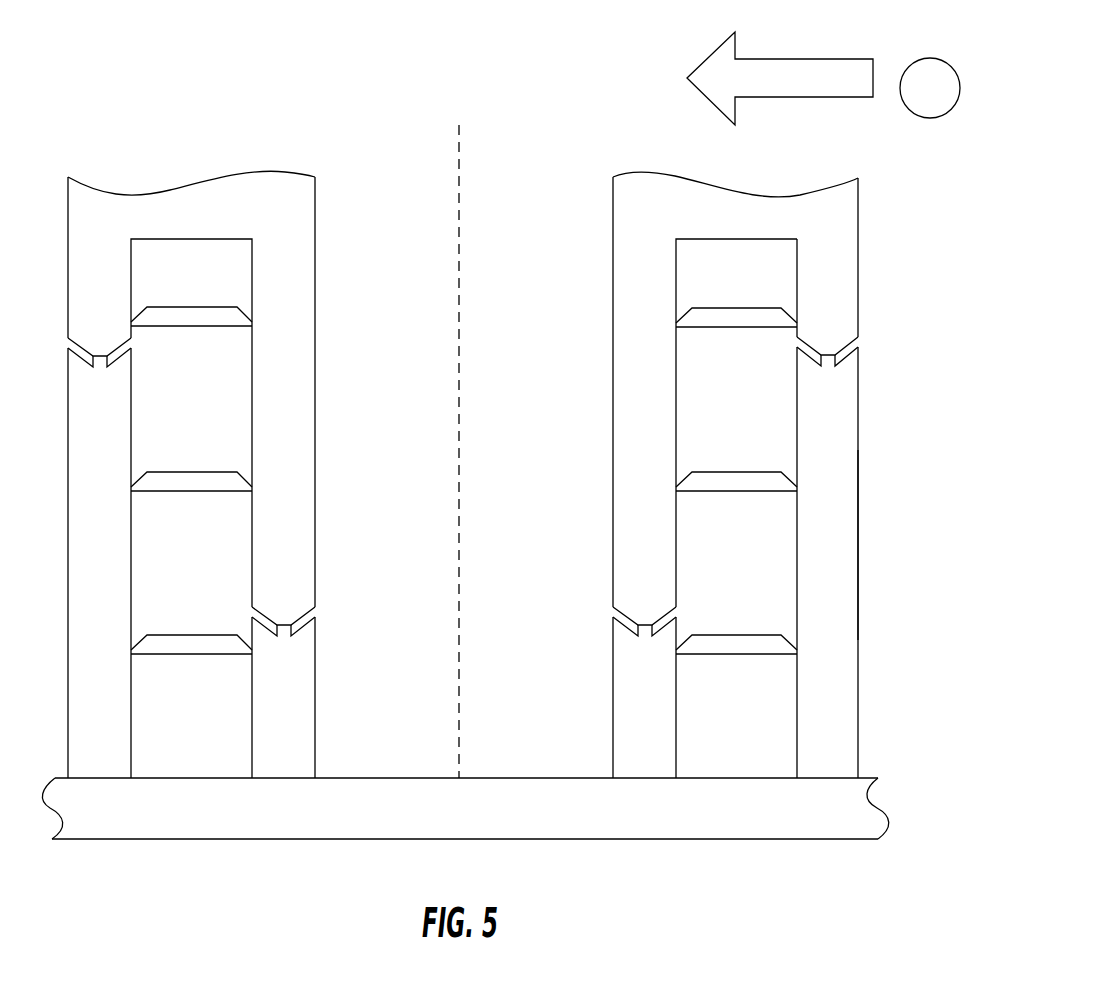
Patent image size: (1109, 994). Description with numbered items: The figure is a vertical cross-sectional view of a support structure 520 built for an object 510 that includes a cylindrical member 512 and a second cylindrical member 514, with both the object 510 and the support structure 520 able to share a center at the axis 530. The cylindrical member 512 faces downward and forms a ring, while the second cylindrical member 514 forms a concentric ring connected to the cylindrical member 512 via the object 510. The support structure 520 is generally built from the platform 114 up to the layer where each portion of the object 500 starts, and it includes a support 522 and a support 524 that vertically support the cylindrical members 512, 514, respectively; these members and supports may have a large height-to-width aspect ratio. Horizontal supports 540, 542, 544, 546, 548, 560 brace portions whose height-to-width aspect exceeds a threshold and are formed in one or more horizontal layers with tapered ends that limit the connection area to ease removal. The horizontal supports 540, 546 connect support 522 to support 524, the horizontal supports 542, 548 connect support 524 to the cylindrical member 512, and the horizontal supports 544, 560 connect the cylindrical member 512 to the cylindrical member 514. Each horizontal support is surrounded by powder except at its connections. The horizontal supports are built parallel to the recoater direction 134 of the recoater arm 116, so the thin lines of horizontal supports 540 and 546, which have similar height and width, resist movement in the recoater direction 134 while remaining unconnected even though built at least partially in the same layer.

The build plate 114 is at (367, 839).
The recoater arm 116 is at (912, 59).
The recoater direction 134 is at (710, 50).
The object 500 is at (190, 399).
The object 510 is at (723, 461).
The cylindrical member 512 is at (613, 277).
The second cylindrical member 514 is at (858, 285).
The support structure 520 is at (874, 545).
The support 522 is at (613, 675).
The support 524 is at (858, 415).
The axis 530 is at (459, 357).
The horizontal support 540 is at (780, 635).
The horizontal support 542 is at (780, 472).
The horizontal support 544 is at (780, 308).
The horizontal support 546 is at (237, 635).
The horizontal support 548 is at (237, 472).
The horizontal support 560 is at (237, 307).